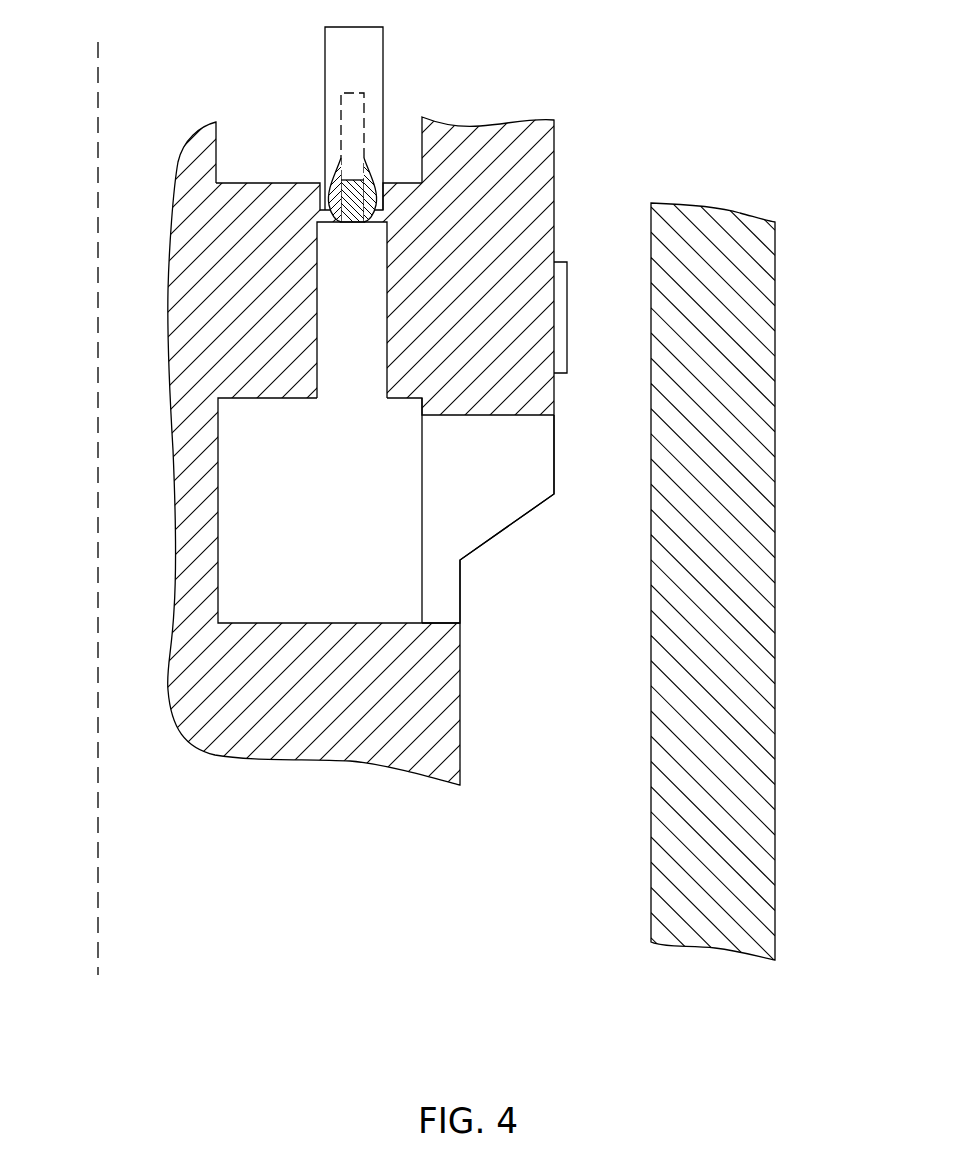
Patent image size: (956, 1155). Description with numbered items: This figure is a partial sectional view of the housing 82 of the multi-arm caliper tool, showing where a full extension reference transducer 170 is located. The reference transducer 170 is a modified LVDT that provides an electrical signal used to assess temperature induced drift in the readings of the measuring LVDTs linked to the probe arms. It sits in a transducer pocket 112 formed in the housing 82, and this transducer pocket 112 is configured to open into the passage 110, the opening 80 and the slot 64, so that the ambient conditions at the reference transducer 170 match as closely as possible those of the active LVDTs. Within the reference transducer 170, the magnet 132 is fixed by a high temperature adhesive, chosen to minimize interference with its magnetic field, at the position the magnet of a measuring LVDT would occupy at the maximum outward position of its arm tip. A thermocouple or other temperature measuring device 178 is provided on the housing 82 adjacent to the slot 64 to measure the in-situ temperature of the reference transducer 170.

The slot 64 is at (488, 498).
The opening 80 is at (327, 498).
The housing 82 is at (554, 167).
The passage 110 is at (370, 315).
The transducer pocket 112 is at (285, 166).
The magnet 132 is at (342, 212).
The full extension reference transducer 170 is at (382, 70).
The temperature measuring device 178 is at (567, 312).